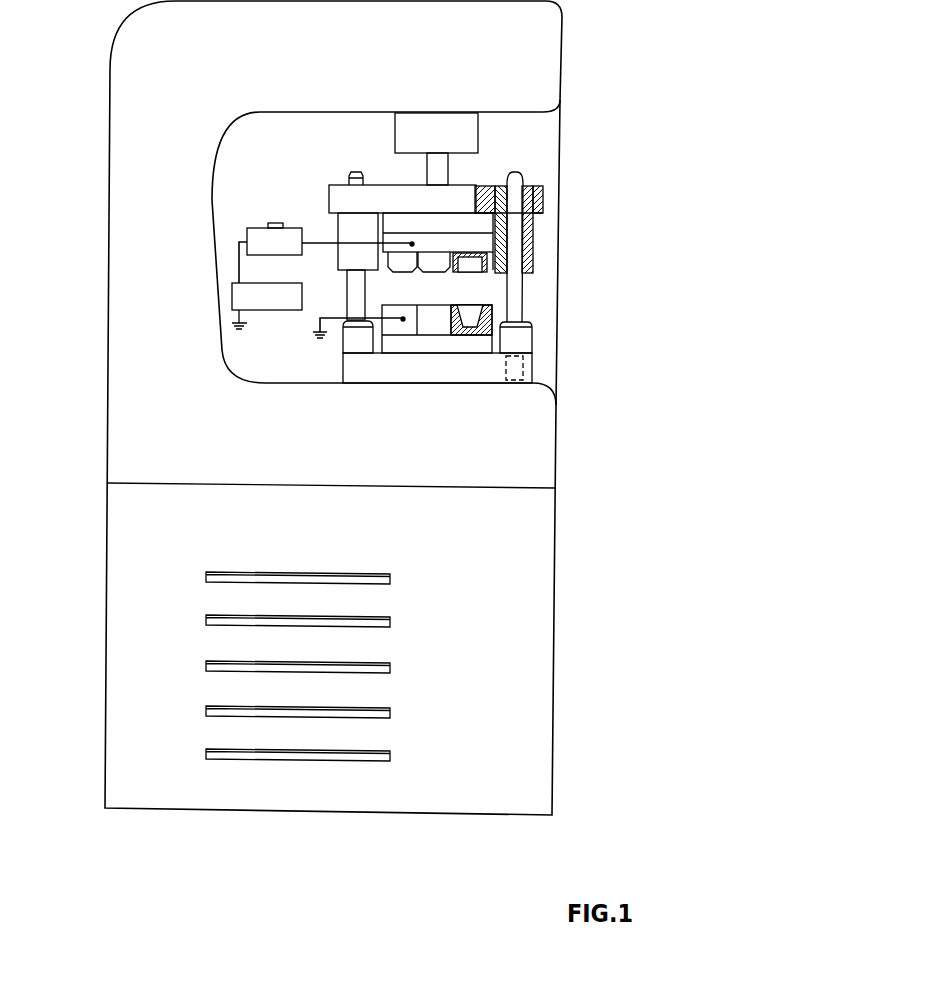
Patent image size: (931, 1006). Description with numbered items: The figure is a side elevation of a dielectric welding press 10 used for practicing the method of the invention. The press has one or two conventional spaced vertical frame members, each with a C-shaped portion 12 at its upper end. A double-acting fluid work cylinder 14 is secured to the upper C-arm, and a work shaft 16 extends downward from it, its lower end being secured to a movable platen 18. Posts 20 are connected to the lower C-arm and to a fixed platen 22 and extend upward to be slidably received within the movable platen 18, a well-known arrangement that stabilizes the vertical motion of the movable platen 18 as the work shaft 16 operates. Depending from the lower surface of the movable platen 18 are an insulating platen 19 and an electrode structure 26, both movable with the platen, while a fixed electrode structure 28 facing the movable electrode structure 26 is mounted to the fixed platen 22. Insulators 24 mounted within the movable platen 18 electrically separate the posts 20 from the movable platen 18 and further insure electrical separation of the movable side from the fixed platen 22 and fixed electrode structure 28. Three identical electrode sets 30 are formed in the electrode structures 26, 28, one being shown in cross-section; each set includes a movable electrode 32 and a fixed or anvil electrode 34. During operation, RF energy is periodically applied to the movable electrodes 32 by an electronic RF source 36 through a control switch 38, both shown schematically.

The dielectric welding press 10 is at (637, 400).
The C-shaped portion 12 is at (127, 263).
The double-acting fluid work cylinder 14 is at (470, 140).
The work shaft 16 is at (438, 172).
The movable platen 18 is at (542, 204).
The insulating platen 19 is at (475, 225).
The posts 20 is at (514, 299).
The fixed platen 22 is at (525, 366).
The insulators 24 is at (530, 243).
The electrode structure 26 is at (413, 250).
The fixed electrode structure 28 is at (436, 322).
The electrode sets 30 is at (394, 267).
The movable electrode 32 is at (437, 267).
The fixed electrode 34 is at (423, 318).
The electronic RF source 36 is at (242, 297).
The control switch 38 is at (265, 238).